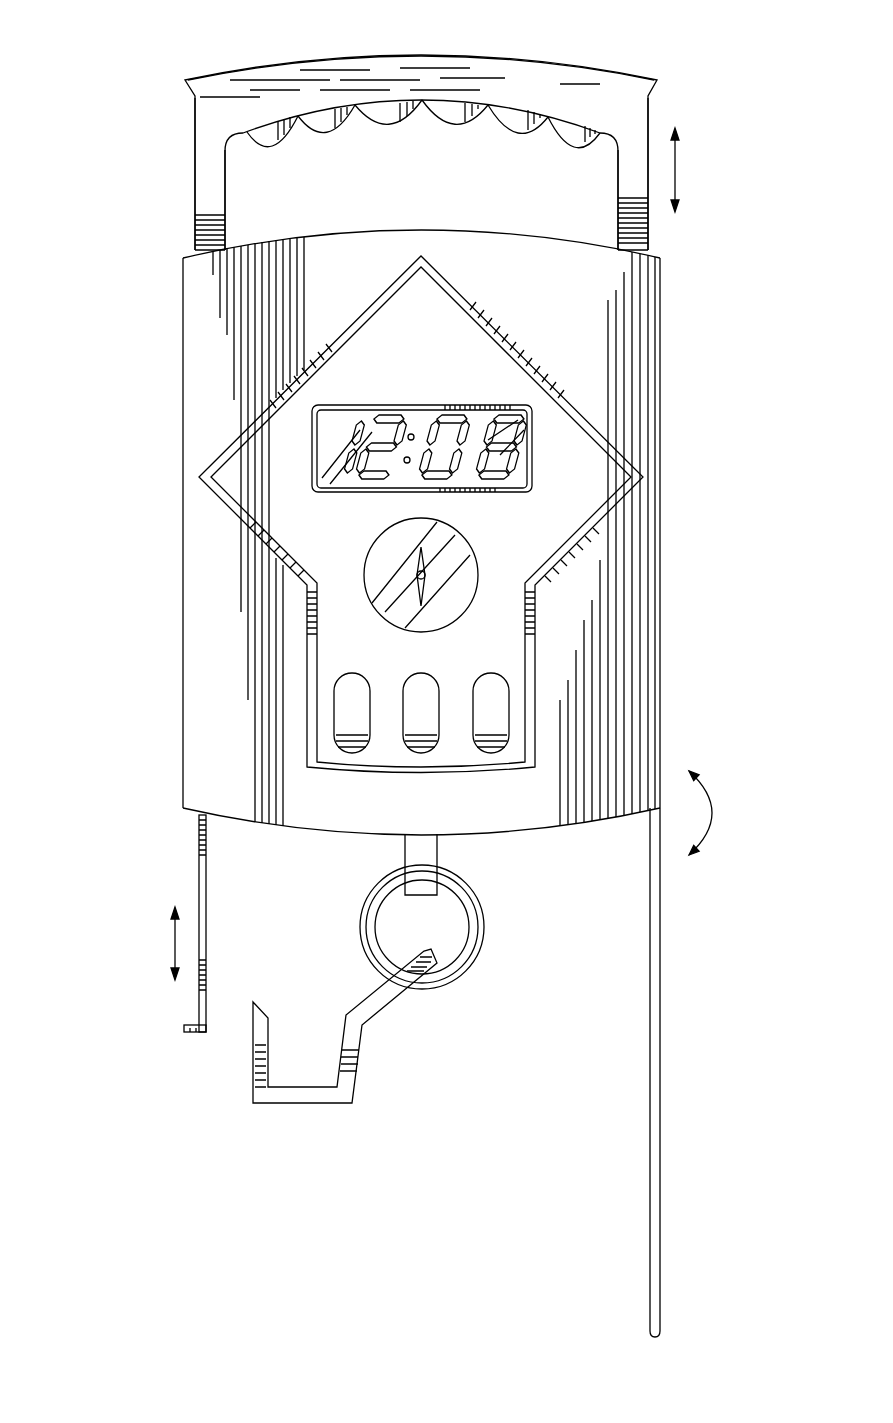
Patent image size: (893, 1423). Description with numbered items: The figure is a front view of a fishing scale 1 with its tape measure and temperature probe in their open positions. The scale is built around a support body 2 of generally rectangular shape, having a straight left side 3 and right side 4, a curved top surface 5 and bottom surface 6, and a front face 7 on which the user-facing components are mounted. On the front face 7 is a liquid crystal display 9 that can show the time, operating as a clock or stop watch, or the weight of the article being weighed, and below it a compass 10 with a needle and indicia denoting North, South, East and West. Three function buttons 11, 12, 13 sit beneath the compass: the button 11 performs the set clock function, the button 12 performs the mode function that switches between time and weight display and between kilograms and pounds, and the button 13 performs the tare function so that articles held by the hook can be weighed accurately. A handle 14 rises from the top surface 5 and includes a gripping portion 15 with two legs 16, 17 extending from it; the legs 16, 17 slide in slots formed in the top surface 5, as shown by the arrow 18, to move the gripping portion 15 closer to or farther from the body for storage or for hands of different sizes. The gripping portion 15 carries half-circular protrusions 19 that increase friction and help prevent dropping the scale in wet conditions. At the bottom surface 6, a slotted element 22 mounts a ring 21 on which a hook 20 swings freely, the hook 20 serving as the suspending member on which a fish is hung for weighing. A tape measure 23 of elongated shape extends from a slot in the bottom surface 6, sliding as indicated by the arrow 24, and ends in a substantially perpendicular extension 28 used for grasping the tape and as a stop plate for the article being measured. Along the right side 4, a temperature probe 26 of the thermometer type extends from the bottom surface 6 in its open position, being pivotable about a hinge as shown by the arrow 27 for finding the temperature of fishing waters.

The fishing scale 1 is at (82, 425).
The support body 2 is at (425, 540).
The left side 3 is at (183, 341).
The right side 4 is at (660, 345).
The top surface 5 is at (420, 230).
The bottom surface 6 is at (537, 832).
The front face 7 is at (210, 607).
The liquid crystal display (LCD) 9 is at (361, 497).
The compass 10 is at (472, 544).
The function button (set clock) 11 is at (490, 703).
The function button (mode) 12 is at (420, 697).
The function button (tare) 13 is at (352, 705).
The handle 14 is at (613, 90).
The gripping portion 15 is at (421, 67).
The leg 16 is at (212, 190).
The leg 17 is at (630, 178).
The arrow 18 is at (678, 172).
The protrusions 19 is at (519, 125).
The hook 20 is at (388, 1005).
The ring 21 is at (483, 950).
The slotted element 22 is at (405, 853).
The tape measure 23 is at (196, 872).
The arrow 24 is at (173, 945).
The temperature probe 26 is at (660, 1040).
The arrow 27 is at (722, 805).
The extension 28 is at (190, 1033).